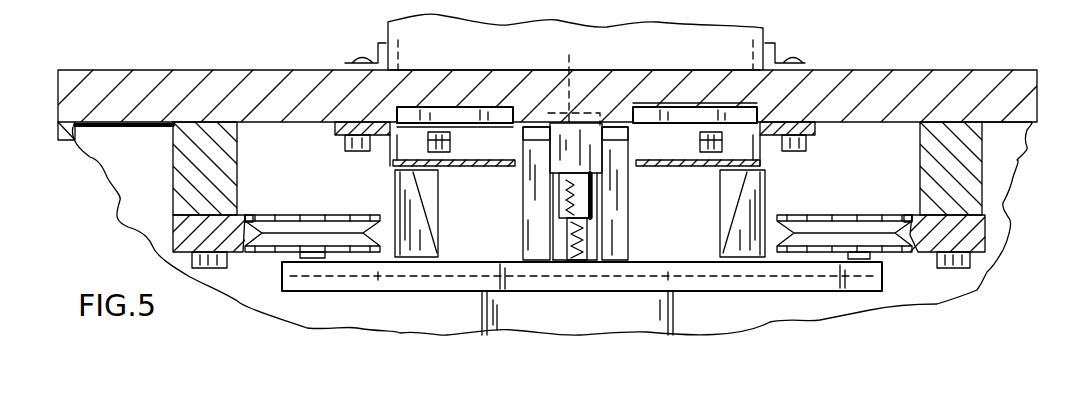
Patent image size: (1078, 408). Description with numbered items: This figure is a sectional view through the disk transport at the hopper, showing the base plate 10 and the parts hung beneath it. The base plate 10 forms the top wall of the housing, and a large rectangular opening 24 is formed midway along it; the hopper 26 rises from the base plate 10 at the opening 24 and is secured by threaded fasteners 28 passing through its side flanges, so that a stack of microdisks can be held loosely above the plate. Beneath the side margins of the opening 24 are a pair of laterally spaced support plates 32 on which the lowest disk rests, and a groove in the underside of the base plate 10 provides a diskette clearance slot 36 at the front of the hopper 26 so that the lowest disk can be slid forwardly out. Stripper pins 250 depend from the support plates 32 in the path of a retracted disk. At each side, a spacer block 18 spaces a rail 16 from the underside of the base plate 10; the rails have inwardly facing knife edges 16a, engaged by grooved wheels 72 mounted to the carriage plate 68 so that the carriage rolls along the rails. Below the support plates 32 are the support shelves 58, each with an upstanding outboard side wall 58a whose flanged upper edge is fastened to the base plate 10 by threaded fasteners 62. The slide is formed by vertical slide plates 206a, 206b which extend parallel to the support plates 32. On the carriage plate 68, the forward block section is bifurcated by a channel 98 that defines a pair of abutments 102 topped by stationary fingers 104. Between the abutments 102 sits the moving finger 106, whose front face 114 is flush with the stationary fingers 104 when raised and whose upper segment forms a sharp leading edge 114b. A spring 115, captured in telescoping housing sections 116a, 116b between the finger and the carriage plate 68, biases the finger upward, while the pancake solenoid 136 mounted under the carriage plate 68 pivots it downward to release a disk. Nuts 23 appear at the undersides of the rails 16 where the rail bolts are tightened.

The base plate 10 is at (103, 78).
The hopper 26 is at (410, 40).
The threaded fasteners 28 is at (360, 60).
The rectangular opening 24 is at (395, 83).
The support plates 32 is at (413, 124).
The moving finger 106 is at (518, 148).
The stationary fingers 104 is at (548, 125).
The sharp leading edge 114b is at (576, 78).
The diskette clearance slot 36 is at (662, 112).
The spacer blocks 18 is at (175, 150).
The rails 16 is at (175, 245).
The knife edges 16a is at (898, 214).
The grooved wheels 72 is at (292, 215).
The threaded fasteners 62 is at (345, 147).
The outboard side wall 58a is at (788, 168).
The support shelves 58 is at (470, 167).
The stripper pins 250 is at (451, 143).
The abutments 102 is at (524, 190).
The spring 115 is at (558, 203).
The front face 114 is at (590, 162).
The upper housing section 116b is at (597, 204).
The lower housing section 116a is at (565, 261).
The slide plate 206b is at (428, 232).
The slide plate 206a is at (728, 232).
The mounting bolt 23 is at (215, 267).
The carriage plate 68 is at (325, 291).
The channel 98 is at (600, 262).
The pancake solenoid 136 is at (676, 300).